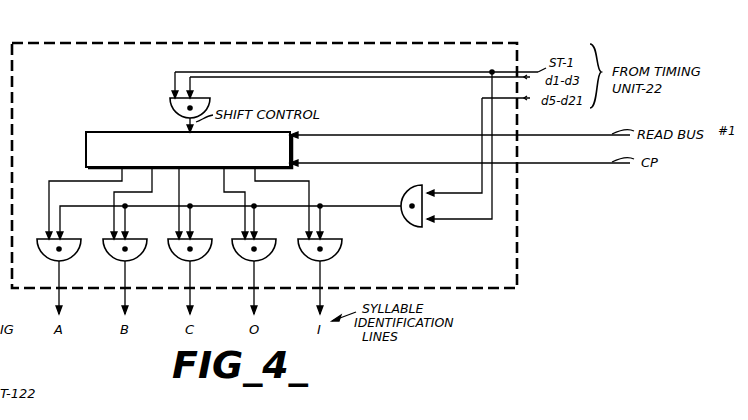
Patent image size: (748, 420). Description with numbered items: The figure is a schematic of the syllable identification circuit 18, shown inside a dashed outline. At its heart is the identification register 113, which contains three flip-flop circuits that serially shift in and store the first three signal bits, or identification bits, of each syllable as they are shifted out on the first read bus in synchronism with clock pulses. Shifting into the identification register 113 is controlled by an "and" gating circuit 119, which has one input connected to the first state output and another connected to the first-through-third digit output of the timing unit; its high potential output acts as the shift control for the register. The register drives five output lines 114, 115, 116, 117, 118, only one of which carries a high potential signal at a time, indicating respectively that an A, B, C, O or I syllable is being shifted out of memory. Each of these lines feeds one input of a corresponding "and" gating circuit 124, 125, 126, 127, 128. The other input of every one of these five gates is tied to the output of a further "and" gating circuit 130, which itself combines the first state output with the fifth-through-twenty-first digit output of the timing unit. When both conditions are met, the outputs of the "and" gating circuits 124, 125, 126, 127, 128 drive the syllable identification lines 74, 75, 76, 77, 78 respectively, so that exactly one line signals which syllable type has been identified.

The syllable identification circuit 18 is at (518, 170).
The identification register 113 is at (86, 135).
The output line 114 is at (49, 193).
The output line 115 is at (152, 174).
The output line 116 is at (190, 178).
The output line 117 is at (246, 196).
The output line 118 is at (310, 187).
The "and" gating circuit 119 is at (210, 100).
The "and" gating circuit 124 is at (49, 262).
The "and" gating circuit 125 is at (118, 262).
The "and" gating circuit 126 is at (184, 262).
The "and" gating circuit 127 is at (248, 262).
The "and" gating circuit 128 is at (314, 262).
The "and" gating circuit 130 is at (402, 222).
The syllable identification line 74 is at (58, 302).
The syllable identification line 75 is at (124, 302).
The syllable identification line 76 is at (189, 302).
The syllable identification line 77 is at (253, 302).
The syllable identification line 78 is at (319, 302).